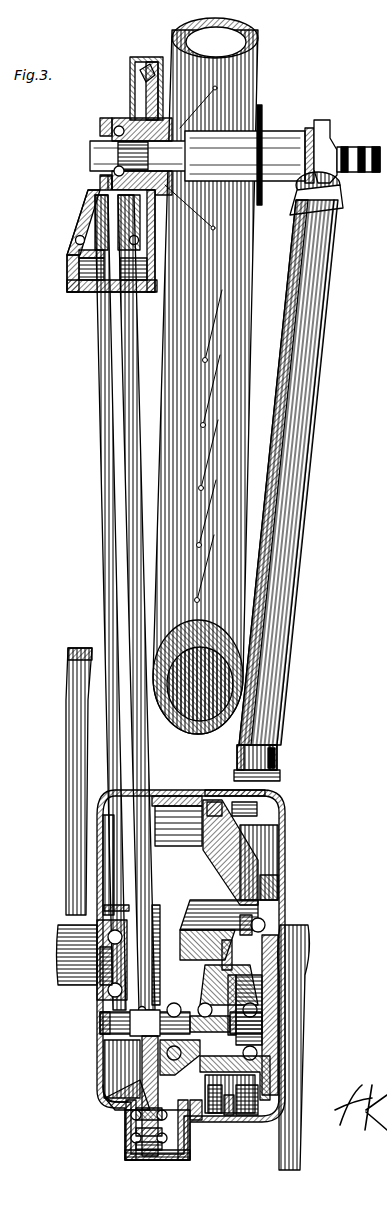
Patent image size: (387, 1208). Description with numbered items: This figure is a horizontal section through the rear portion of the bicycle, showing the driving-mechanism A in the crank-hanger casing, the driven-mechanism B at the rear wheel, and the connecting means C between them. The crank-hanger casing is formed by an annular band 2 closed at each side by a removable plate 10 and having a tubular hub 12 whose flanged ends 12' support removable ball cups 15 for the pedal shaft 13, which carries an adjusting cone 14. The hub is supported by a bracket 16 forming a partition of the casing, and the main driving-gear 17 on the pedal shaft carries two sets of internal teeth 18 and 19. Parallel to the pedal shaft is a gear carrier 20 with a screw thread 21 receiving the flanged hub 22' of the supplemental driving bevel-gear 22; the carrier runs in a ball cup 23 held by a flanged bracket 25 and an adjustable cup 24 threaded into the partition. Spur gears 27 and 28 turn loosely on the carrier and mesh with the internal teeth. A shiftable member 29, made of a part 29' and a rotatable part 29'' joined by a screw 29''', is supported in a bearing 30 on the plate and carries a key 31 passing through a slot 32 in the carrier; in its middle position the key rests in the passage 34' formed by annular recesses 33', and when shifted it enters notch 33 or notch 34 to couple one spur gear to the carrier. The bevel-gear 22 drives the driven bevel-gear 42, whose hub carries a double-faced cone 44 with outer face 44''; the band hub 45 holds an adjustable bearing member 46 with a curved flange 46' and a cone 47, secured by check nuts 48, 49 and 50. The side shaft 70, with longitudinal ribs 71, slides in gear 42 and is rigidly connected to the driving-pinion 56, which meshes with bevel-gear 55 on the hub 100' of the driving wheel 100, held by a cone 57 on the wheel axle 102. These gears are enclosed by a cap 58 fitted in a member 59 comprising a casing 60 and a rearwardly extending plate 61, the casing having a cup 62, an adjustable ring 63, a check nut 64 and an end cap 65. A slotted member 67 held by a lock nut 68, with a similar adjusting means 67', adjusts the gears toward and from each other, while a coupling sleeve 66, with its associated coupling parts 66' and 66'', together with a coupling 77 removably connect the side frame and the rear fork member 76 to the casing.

The annular member or band 2 is at (165, 797).
The removable plate 10 is at (100, 843).
The tubular hub 12 is at (162, 947).
The flanged ends 12' is at (171, 891).
The pedal shaft 13 is at (306, 946).
The adjusting cone 14 is at (105, 960).
The removable ball cups 15 is at (108, 986).
The bracket 16 is at (263, 863).
The main driving-gear 17 is at (283, 824).
The internal gear teeth 18 is at (281, 800).
The internal gear teeth 19 is at (276, 793).
The gear carrier 20 is at (256, 1040).
The screw thread 21 is at (236, 975).
The supplemental driving bevel-gear 22 is at (219, 927).
The screw threaded and flanged hub 22' is at (196, 1139).
The ball cup 23 is at (150, 1058).
The adjustable cup 24 is at (276, 1006).
The flanged bracket 25 is at (60, 953).
The spur gear 27 is at (242, 1118).
The spur gear 28 is at (216, 1108).
The longitudinally adjustable member 29 is at (187, 1031).
The part of shiftable member 29' is at (112, 1024).
The rotatable part 29'' is at (130, 1011).
The fastening screw 29''' is at (269, 1027).
The support or bearing 30 is at (110, 1043).
The key 31 is at (272, 930).
The slot 32 is at (280, 1018).
The notch 33 is at (271, 915).
The annular recesses 33' is at (230, 1137).
The notch 34 is at (291, 994).
The passage 34' is at (271, 1084).
The bevel-gear 42 is at (100, 1075).
The double-faced cone 44 is at (132, 1130).
The outer face of cone 44'' is at (89, 1130).
The hub 45 is at (128, 1115).
The adjustable bearing member 46 is at (157, 1154).
The inwardly curved wall or flange 46' is at (83, 1096).
The cone 47 is at (128, 1136).
The check nut 48 is at (158, 1150).
The check nut 49 is at (128, 1152).
The check nut 50 is at (150, 1160).
The bevel-gear 55 is at (143, 75).
The driving-pinion 56 is at (72, 243).
The cone 57 is at (100, 126).
The cap 58 is at (158, 58).
The casing member 59 is at (100, 180).
The casing 60 is at (80, 210).
The rearwardly extending plate 61 is at (129, 97).
The cup 62 is at (93, 196).
The adjustable ring 63 is at (68, 262).
The check nut 64 is at (68, 280).
The cap 65 is at (80, 290).
The coupling sleeve 66 is at (239, 757).
The tube end cap 66' is at (286, 748).
The tube end flange 66'' is at (240, 775).
The eccentrically slotted member 67 is at (84, 177).
The adjusting means 67' is at (342, 151).
The lock nut 68 is at (98, 136).
The side shaft 70 is at (122, 510).
The longitudinal ribs or flanges 71 is at (112, 1065).
The rear fork member 76 is at (310, 262).
The coupling 77 is at (338, 192).
The driving wheel 100 is at (225, 376).
The hub of driving wheel 100' is at (247, 153).
The wheel axle 102 is at (92, 152).
The driving-mechanism A is at (176, 907).
The driven-mechanism B is at (42, 232).
The connecting means C is at (79, 572).